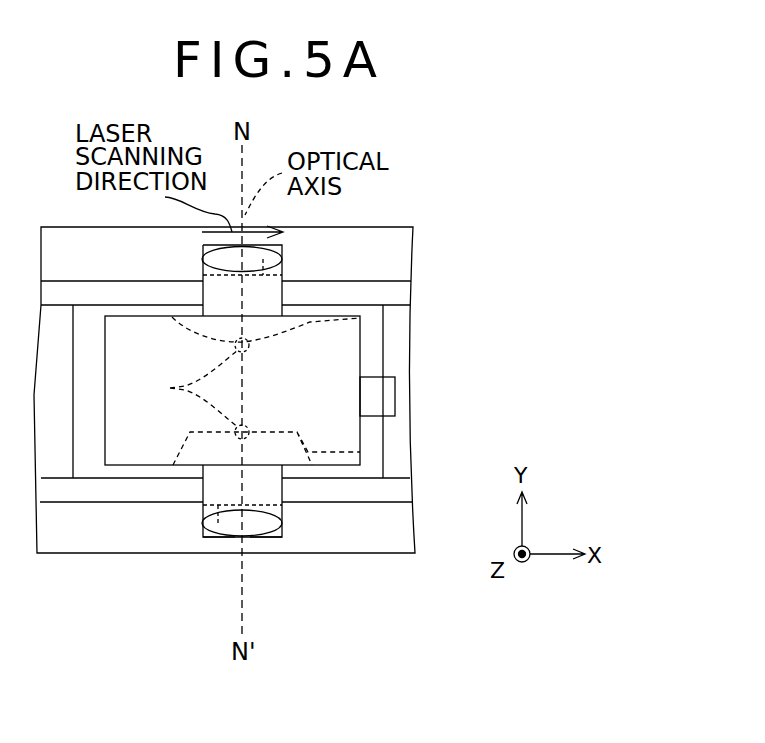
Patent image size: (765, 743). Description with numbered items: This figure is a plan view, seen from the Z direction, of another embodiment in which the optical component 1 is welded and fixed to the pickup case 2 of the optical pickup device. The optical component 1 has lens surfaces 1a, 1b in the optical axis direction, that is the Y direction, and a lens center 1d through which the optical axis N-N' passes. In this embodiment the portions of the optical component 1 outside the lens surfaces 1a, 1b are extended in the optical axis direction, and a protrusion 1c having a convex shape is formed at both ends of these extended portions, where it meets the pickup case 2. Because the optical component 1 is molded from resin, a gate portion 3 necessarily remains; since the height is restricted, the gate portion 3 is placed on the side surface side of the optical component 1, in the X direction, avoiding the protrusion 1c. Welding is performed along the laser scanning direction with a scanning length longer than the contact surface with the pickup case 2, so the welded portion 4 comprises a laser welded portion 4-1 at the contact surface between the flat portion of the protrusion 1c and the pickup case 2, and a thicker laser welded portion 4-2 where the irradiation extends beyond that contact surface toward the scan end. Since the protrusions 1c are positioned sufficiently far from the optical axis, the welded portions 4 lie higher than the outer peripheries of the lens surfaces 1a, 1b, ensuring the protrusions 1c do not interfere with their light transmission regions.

The optical component 1 is at (339, 355).
The lens surface 1a is at (360, 318).
The lens surface 1b is at (360, 452).
The protrusion 1c is at (205, 256).
The lens center 1d is at (189, 388).
The pickup case 2 is at (393, 248).
The gate portion 3 is at (378, 398).
The welded portion 4 is at (222, 540).
The laser welded portion of the contact surface 4-1 is at (265, 538).
The laser welded portion of the protrusion 4-2 is at (205, 532).